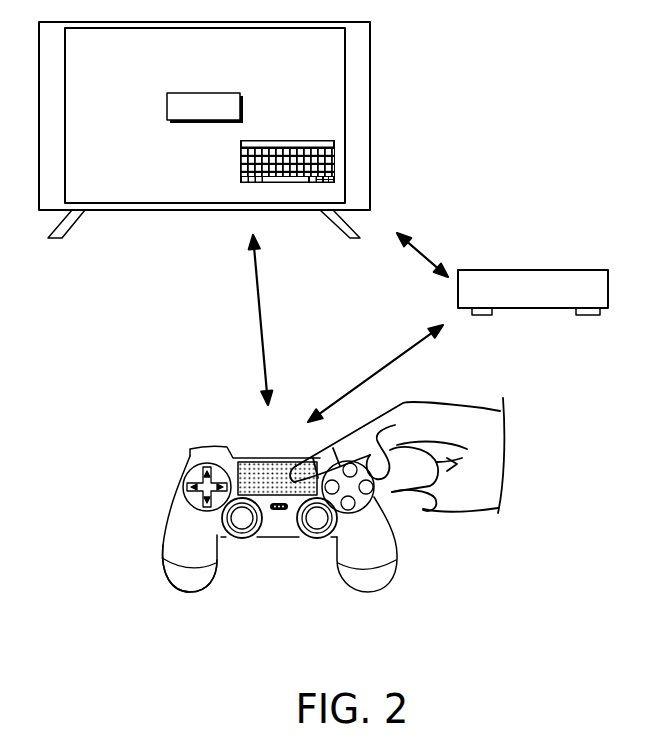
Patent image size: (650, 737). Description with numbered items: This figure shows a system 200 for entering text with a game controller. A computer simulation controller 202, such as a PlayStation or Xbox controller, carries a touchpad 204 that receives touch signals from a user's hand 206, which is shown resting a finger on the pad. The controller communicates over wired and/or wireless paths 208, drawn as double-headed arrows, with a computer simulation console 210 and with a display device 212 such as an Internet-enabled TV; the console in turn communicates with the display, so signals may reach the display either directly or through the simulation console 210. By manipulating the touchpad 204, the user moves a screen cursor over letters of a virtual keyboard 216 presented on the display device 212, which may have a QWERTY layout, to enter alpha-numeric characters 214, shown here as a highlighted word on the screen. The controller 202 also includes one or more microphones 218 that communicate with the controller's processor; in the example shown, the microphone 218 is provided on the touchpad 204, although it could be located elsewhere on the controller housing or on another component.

The system 200 is at (245, 522).
The computer simulation controller 202 is at (180, 563).
The touchpad 204 is at (268, 475).
The hand 206 is at (490, 438).
The wired and/or wireless paths 208 is at (258, 320).
The computer simulation console 210 is at (533, 270).
The display device 212 is at (362, 115).
The alpha-numeric characters 214 is at (205, 92).
The virtual keyboard 216 is at (287, 140).
The microphone 218 is at (278, 512).